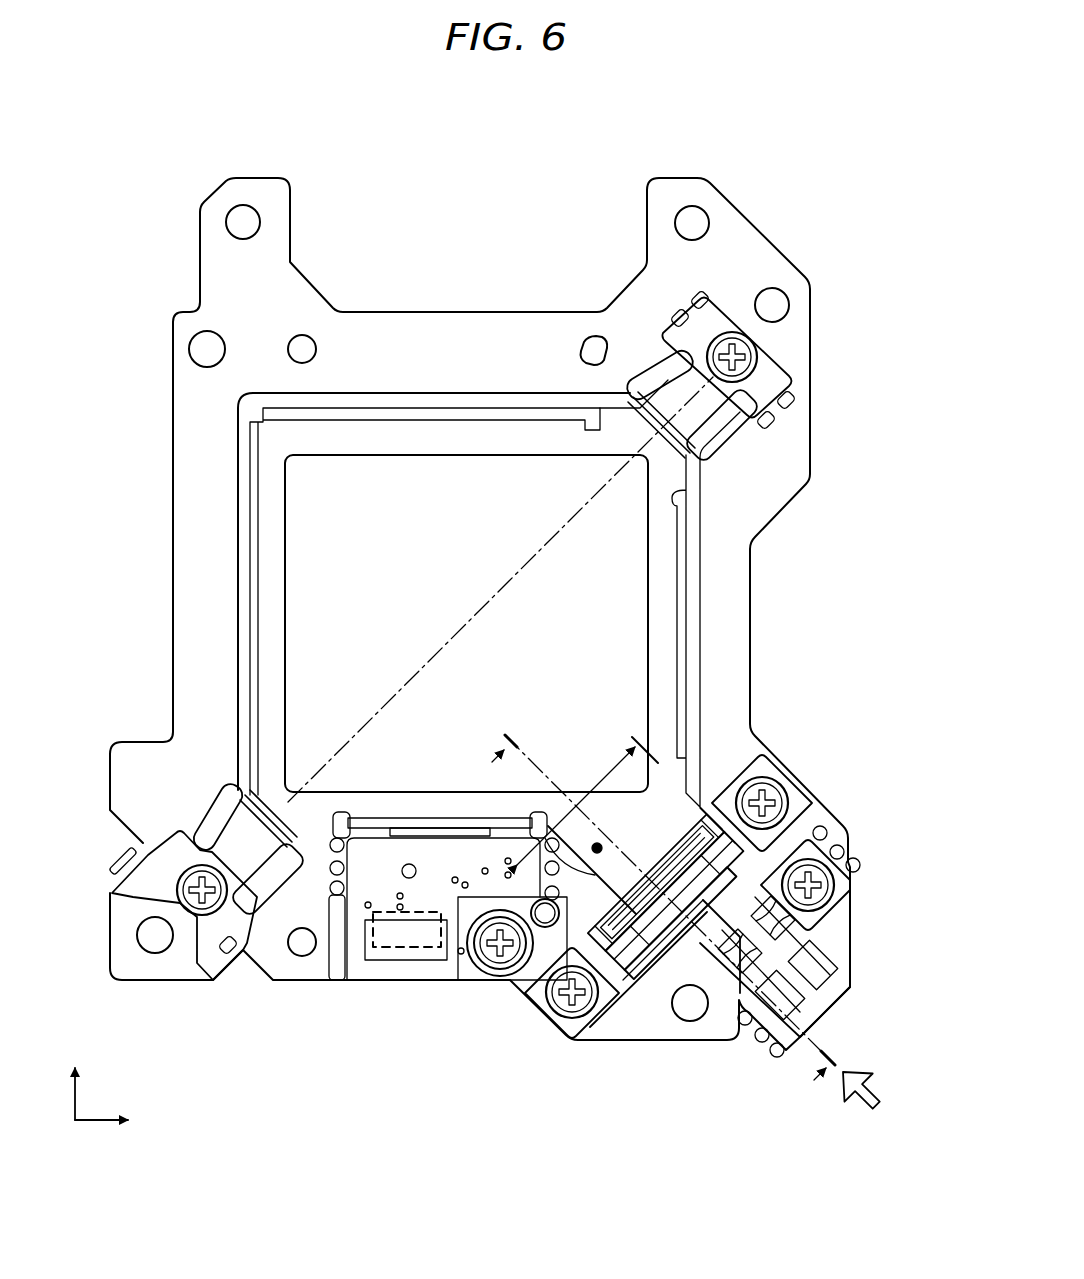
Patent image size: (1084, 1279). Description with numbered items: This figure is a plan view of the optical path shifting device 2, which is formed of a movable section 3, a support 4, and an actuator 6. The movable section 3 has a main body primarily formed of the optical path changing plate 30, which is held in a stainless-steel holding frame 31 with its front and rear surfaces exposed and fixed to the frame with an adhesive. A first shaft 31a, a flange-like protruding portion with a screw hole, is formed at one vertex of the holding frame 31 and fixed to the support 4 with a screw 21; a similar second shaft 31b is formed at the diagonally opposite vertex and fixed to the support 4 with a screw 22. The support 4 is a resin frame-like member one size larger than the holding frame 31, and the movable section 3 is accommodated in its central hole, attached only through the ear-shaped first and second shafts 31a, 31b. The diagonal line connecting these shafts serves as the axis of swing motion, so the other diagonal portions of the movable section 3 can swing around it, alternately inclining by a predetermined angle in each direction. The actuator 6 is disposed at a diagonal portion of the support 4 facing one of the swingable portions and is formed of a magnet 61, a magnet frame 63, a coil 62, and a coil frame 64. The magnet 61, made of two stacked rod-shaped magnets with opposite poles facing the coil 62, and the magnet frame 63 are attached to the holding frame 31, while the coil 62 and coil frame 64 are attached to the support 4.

The optical path shifting device 2 is at (703, 150).
The movable section 3 is at (420, 252).
The support 4 is at (353, 330).
The actuator 6 is at (932, 838).
The screw 21 is at (756, 356).
The screw 22 is at (180, 882).
The optical path changing plate 30 is at (503, 485).
The holding frame 31 is at (443, 430).
The first shaft 31a is at (682, 392).
The second shaft 31b is at (228, 850).
The magnet 61 is at (715, 870).
The coil 62 is at (708, 903).
The magnet frame 63 is at (700, 830).
The coil frame 64 is at (700, 920).